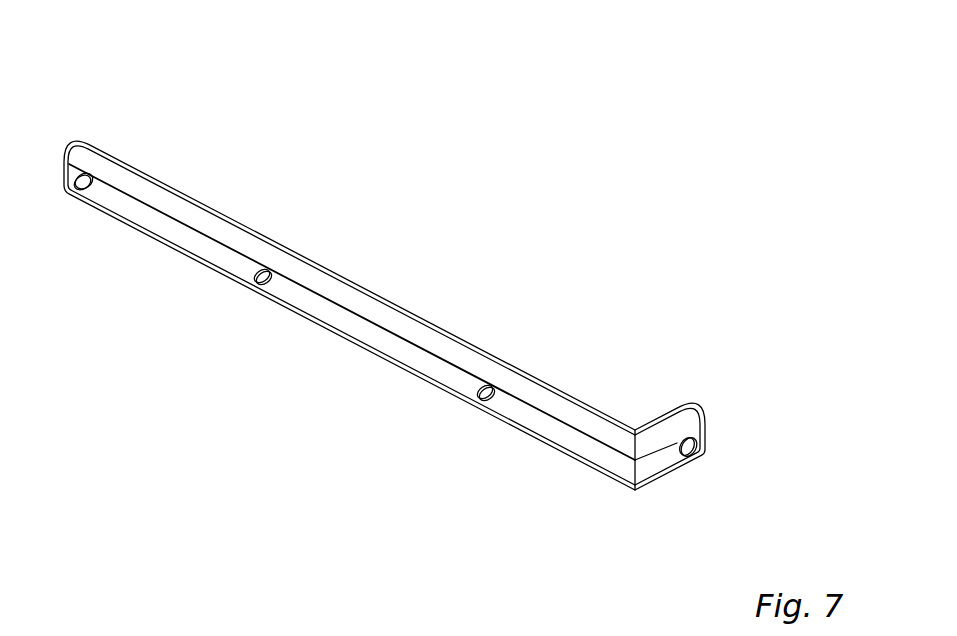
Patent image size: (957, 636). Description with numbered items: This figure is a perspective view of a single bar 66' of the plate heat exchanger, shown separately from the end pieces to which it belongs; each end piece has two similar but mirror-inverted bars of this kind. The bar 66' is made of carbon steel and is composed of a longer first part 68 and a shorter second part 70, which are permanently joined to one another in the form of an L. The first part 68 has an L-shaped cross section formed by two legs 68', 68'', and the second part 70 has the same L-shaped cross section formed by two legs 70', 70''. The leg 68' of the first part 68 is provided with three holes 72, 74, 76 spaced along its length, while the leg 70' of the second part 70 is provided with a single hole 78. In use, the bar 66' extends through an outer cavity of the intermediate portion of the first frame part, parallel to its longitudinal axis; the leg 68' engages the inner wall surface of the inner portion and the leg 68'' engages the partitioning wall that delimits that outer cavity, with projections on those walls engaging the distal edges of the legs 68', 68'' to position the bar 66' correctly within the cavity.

The bar 66' is at (465, 302).
The first part 68 is at (349, 291).
The leg 68' is at (360, 362).
The leg 68'' is at (351, 268).
The second part 70 is at (756, 361).
The leg 70' is at (659, 520).
The leg 70'' is at (663, 365).
The hole 72 is at (68, 192).
The hole 74 is at (255, 284).
The hole 76 is at (477, 397).
The hole 78 is at (704, 433).